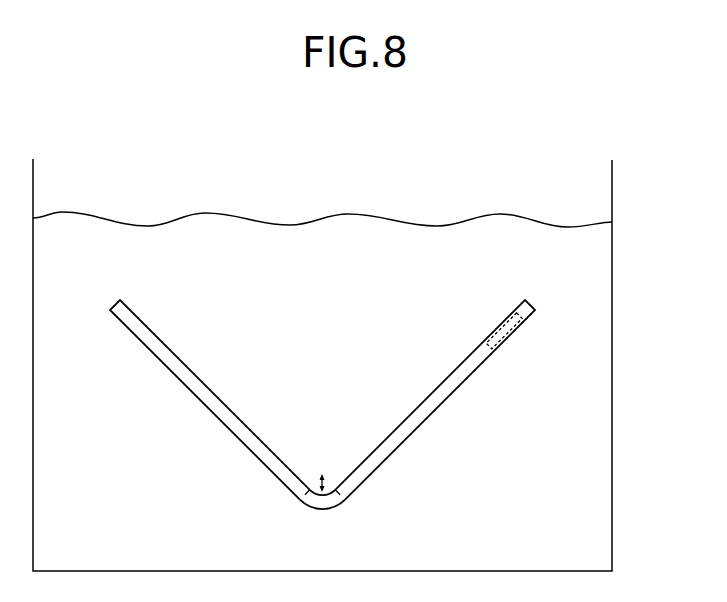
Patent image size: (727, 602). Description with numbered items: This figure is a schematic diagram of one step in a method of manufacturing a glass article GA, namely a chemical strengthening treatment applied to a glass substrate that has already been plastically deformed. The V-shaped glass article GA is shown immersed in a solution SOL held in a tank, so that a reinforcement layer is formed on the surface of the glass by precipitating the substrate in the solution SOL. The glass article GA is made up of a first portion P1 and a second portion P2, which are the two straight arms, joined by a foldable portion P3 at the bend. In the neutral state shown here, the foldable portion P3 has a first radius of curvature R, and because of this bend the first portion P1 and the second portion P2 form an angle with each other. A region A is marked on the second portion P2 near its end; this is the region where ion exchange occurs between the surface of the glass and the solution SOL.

The solution SOL is at (600, 282).
The glass article GA is at (322, 391).
The first portion P1 is at (178, 361).
The second portion P2 is at (479, 353).
The foldable portion P3 is at (334, 490).
The first radius of curvature R is at (312, 478).
The region A is at (486, 325).